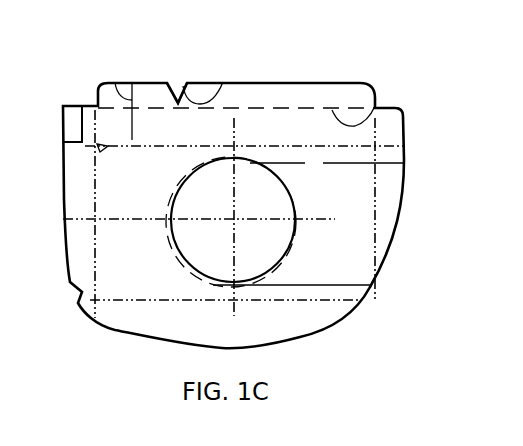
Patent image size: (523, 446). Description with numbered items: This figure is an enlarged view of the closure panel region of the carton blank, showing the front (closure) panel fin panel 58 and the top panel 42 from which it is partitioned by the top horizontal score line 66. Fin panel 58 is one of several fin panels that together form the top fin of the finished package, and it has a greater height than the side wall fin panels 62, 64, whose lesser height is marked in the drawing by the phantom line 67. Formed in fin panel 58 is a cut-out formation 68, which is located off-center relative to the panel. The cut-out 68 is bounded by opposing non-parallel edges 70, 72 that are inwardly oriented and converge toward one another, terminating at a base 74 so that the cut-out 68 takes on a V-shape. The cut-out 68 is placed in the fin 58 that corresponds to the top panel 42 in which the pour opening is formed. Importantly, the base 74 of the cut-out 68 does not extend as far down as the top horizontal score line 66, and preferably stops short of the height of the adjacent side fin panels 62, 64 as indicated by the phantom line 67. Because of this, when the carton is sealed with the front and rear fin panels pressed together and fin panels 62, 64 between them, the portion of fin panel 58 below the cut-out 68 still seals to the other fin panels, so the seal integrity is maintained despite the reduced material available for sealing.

The top panel 42 is at (92, 105).
The side wall fin panel 62 is at (68, 117).
The top horizontal score line 66 is at (95, 148).
The front (closure) panel fin panel 58 is at (115, 81).
The non-parallel edge 70 is at (171, 78).
The cut-out formation 68 is at (177, 74).
The non-parallel edge 72 is at (185, 80).
The base 74 is at (205, 95).
The phantom line 67 is at (378, 105).
The side wall fin panel 64 is at (392, 130).